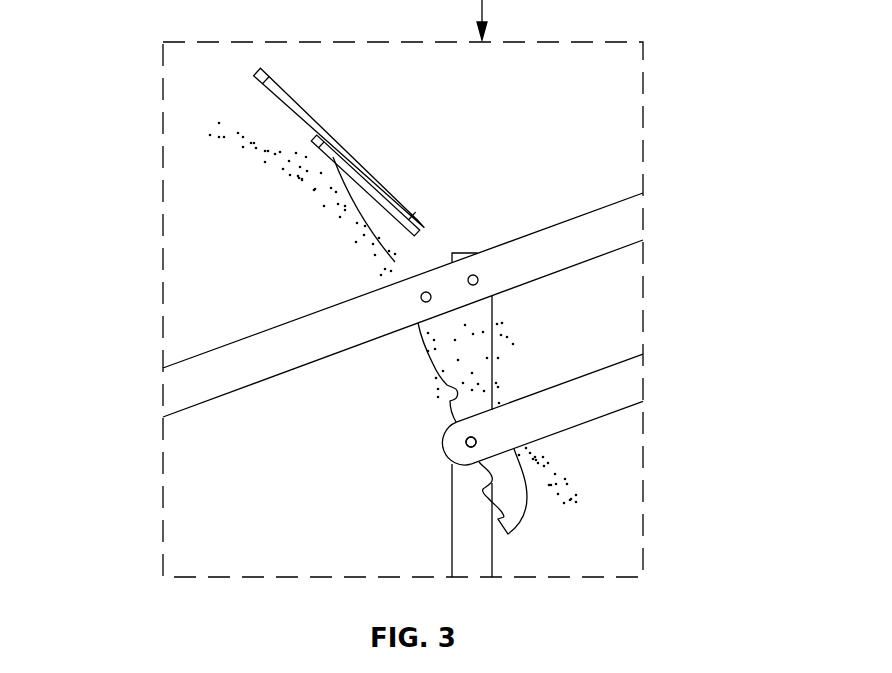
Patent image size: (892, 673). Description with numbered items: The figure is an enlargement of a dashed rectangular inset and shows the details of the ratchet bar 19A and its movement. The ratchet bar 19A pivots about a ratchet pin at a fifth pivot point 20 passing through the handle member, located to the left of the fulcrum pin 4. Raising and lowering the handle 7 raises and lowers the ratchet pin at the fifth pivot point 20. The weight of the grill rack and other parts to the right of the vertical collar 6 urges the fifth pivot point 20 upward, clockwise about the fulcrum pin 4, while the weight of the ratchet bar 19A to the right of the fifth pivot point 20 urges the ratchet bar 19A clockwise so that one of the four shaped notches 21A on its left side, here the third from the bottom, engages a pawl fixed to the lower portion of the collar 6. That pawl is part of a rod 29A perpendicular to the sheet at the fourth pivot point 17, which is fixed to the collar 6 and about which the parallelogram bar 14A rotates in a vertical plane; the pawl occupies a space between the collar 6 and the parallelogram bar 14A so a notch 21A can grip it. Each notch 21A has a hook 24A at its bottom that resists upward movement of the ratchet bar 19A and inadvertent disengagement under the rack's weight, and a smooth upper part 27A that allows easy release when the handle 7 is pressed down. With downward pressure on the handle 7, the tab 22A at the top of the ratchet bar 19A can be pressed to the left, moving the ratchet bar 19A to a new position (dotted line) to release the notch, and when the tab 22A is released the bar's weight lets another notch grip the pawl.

The fulcrum pin 4 is at (477, 277).
The vertical collar 6 is at (483, 319).
The handle 7 is at (224, 370).
The parallelogram bar 14A is at (582, 404).
The fourth pivot point 17 is at (466, 443).
The ratchet bar 19A is at (368, 198).
The fifth pivot point 20 is at (425, 292).
The shaped notches 21A is at (483, 478).
The tab 22A is at (280, 87).
The hook 24A is at (510, 531).
The smooth upper part 27A is at (450, 388).
The rod 29A is at (471, 442).